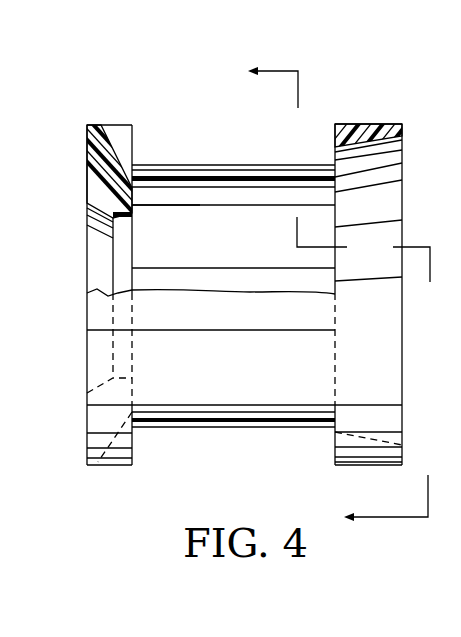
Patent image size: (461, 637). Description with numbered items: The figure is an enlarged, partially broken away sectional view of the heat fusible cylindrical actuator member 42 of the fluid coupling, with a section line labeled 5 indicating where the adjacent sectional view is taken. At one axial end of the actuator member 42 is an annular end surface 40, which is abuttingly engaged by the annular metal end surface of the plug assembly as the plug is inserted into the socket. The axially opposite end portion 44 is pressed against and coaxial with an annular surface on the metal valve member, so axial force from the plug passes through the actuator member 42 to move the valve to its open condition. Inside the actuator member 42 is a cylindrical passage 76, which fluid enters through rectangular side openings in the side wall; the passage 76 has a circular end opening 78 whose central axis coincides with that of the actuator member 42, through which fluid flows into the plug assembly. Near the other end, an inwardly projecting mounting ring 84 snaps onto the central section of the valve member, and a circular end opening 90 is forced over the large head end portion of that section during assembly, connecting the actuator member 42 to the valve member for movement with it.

The annular end surface 40 is at (403, 130).
The cylindrical actuator member 42 is at (328, 99).
The axially opposite end portion 44 is at (87, 178).
The circular end opening 78 is at (403, 203).
The inwardly projecting mounting ring 84 is at (132, 195).
The cylindrical passage 76 is at (168, 237).
The circular end opening 90 is at (123, 277).
The section line 5- 5 is at (332, 297).